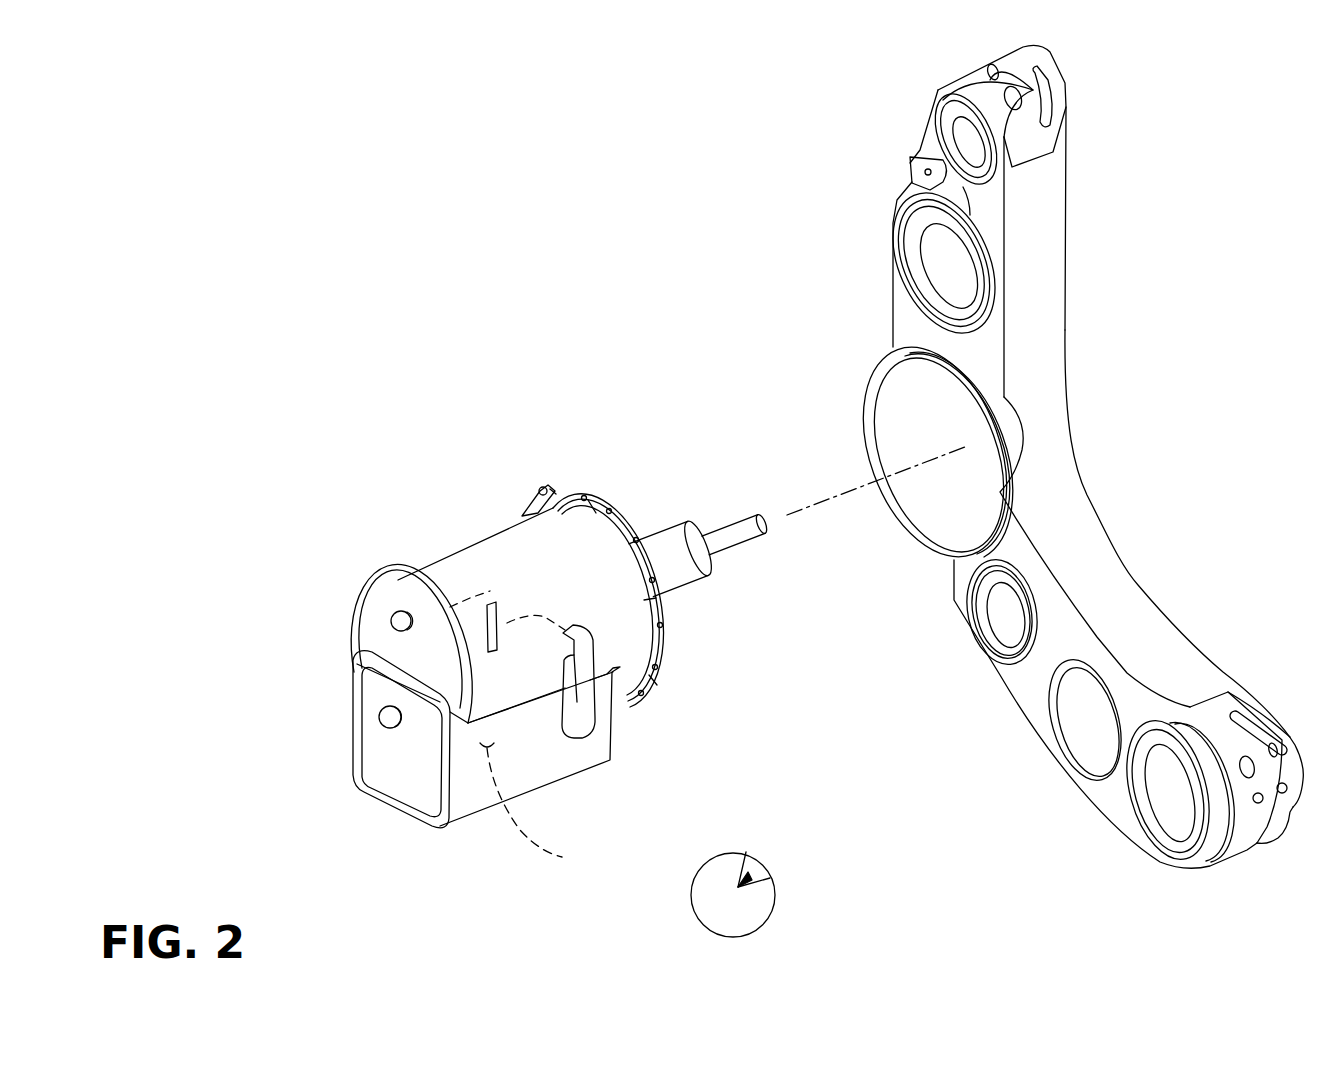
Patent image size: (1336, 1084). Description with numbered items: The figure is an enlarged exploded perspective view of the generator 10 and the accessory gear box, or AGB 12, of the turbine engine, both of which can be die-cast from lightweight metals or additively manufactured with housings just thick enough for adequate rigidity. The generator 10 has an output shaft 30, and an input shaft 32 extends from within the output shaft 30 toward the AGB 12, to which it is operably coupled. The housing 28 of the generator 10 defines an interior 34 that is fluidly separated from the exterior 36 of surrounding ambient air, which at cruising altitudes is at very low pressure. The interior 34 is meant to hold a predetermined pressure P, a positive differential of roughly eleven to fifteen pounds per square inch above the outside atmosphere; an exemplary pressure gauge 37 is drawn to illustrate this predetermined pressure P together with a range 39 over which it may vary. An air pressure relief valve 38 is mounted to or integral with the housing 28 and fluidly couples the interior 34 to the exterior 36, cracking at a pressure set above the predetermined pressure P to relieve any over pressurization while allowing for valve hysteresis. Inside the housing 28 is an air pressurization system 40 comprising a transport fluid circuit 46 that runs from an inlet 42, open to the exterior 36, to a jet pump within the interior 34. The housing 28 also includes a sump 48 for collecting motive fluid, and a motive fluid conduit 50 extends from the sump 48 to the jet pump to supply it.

The generator 10 is at (374, 471).
The AGB 12 is at (907, 88).
The housing 28 is at (432, 572).
The output shaft 30 is at (705, 567).
The input shaft 32 is at (738, 521).
The interior 34 is at (684, 897).
The exterior 36 is at (246, 697).
The pressure gauge 37 is at (753, 905).
The air pressure relief valve 38 is at (386, 720).
The range 39 is at (742, 876).
The air pressurization system 40 is at (489, 592).
The inlet 42 is at (396, 622).
The transport fluid circuit 46 is at (458, 598).
The sump 48 is at (555, 765).
The motive fluid conduit 50 is at (588, 709).
The predetermined pressure P is at (754, 874).